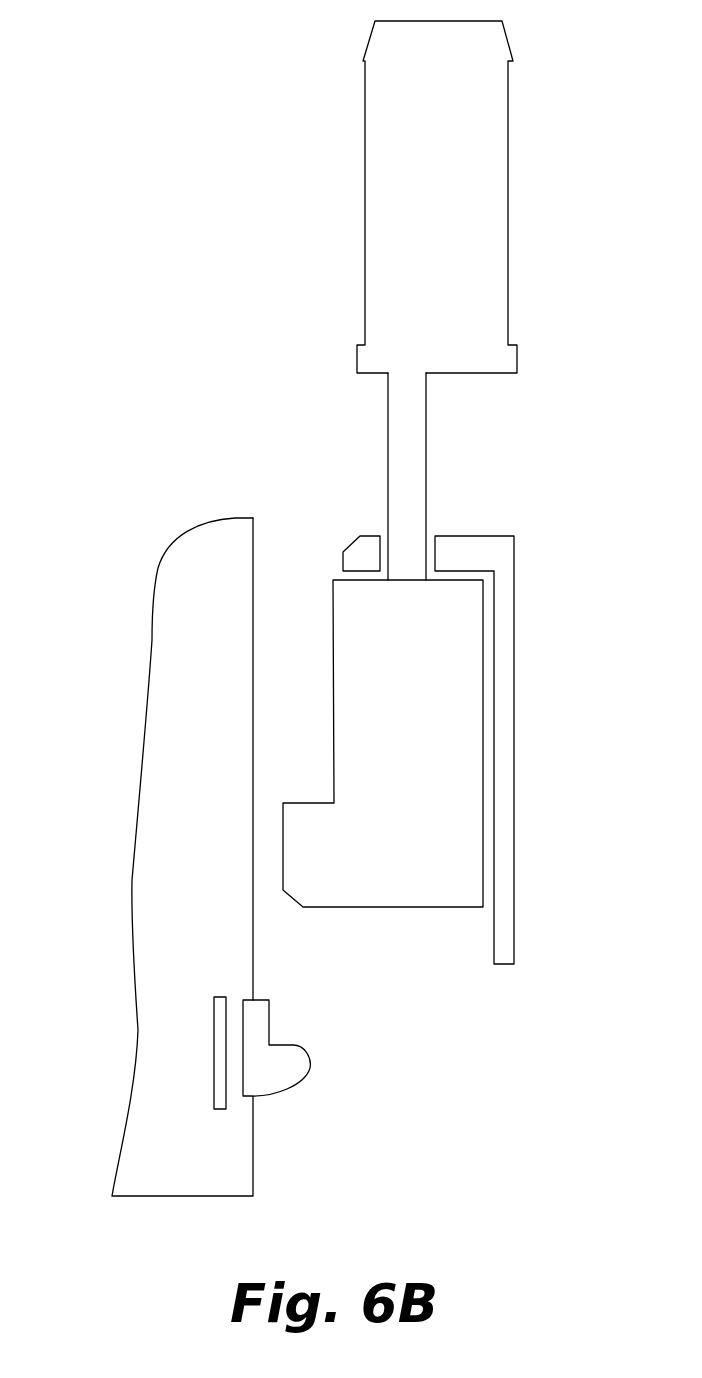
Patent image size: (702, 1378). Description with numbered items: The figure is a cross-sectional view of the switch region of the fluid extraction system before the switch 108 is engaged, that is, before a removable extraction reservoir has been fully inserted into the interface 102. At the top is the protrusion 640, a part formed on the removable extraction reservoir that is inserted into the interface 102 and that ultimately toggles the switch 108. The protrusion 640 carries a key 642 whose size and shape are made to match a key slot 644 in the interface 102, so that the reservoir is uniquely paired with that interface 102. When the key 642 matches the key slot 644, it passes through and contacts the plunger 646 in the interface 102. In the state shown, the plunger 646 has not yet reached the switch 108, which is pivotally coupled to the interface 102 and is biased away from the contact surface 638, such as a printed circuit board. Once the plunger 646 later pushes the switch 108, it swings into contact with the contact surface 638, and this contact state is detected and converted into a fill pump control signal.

The interface 102 is at (165, 710).
The switch 108 is at (283, 1062).
The contact surface 638 is at (218, 1077).
The protrusion 640 is at (510, 363).
The key 642 is at (402, 473).
The key slot 644 is at (505, 560).
The plunger 646 is at (400, 898).